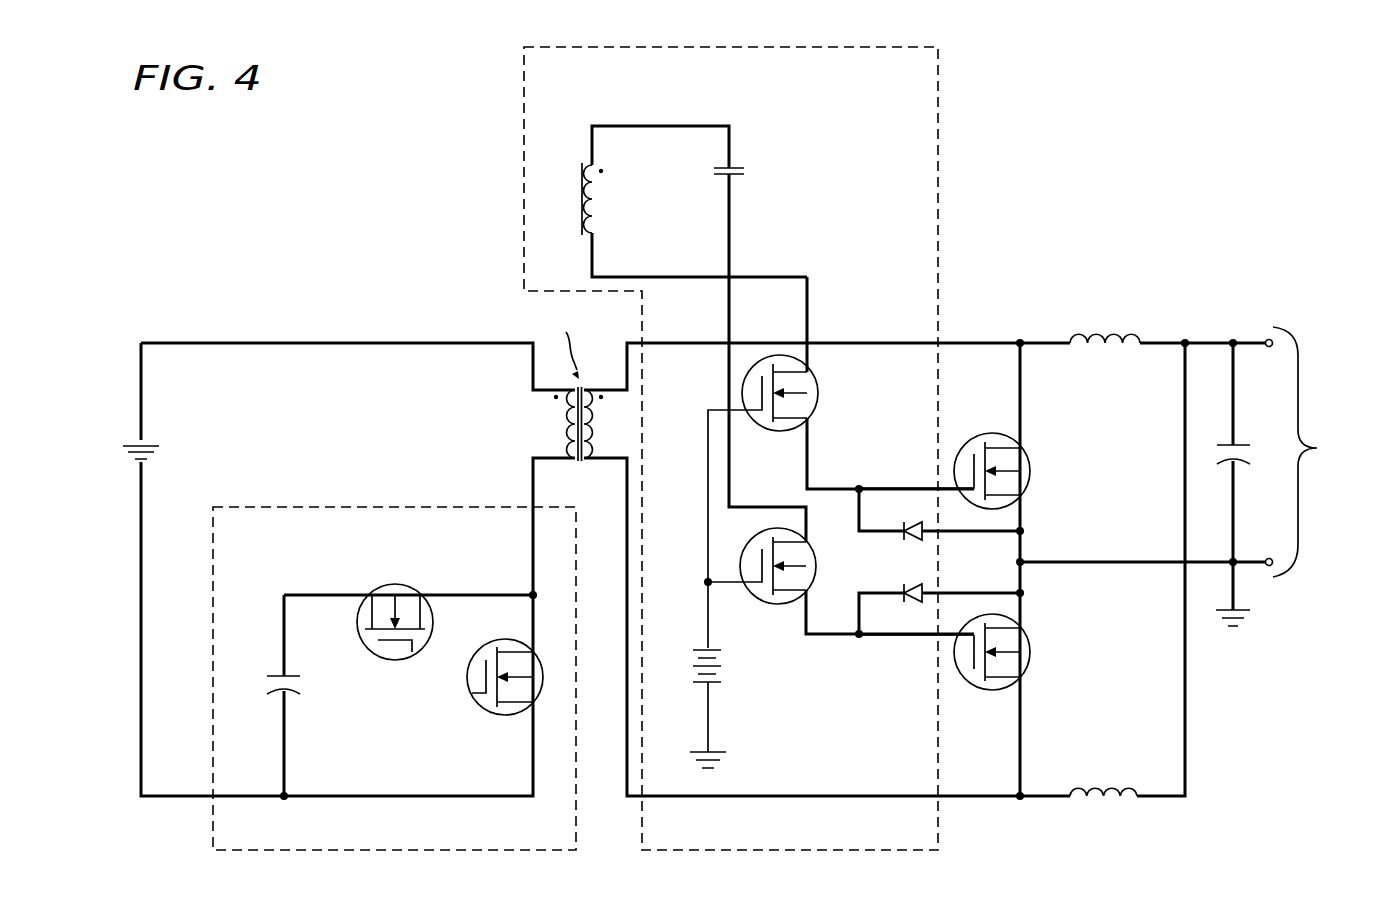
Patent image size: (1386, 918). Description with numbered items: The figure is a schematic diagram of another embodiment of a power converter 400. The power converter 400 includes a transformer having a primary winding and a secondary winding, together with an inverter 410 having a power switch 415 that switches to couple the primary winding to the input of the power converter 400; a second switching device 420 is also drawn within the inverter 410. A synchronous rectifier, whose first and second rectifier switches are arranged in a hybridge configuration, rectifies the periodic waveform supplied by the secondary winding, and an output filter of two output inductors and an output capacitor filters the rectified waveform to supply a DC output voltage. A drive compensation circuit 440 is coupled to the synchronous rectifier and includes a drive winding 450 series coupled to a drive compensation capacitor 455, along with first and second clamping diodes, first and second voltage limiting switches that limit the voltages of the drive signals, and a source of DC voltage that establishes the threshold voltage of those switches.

The power converter 400 is at (415, 206).
The inverter 410 is at (212, 832).
The power switch 415 is at (505, 716).
The switching transistor 420 is at (394, 583).
The drive compensation circuit 440 is at (940, 172).
The drive winding 450 is at (603, 201).
The drive compensation capacitor 455 is at (753, 172).